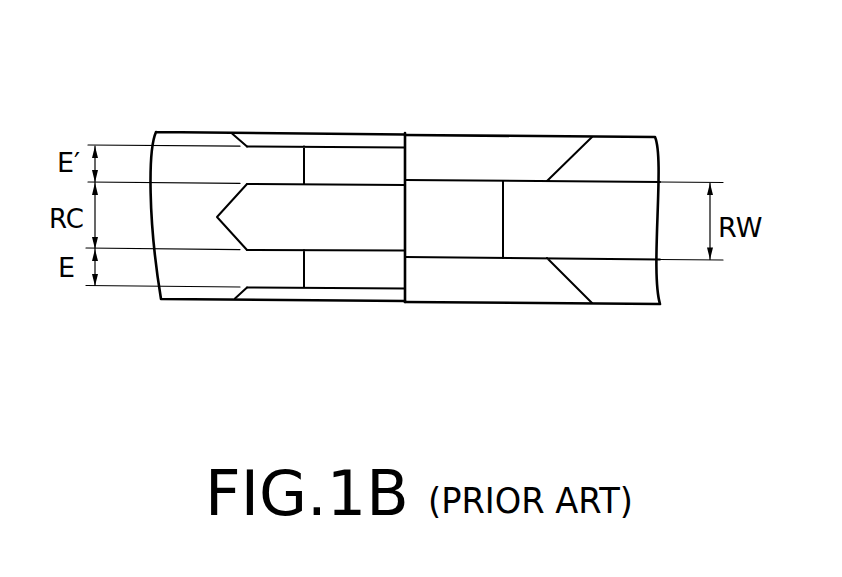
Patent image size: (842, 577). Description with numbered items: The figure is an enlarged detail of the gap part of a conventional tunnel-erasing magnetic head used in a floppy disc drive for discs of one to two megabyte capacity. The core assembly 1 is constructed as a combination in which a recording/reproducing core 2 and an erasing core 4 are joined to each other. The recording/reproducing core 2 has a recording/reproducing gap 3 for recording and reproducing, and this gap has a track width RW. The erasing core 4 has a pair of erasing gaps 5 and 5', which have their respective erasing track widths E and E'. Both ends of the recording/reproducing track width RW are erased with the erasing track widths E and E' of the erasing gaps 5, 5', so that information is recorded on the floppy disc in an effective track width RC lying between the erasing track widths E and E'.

The core assembly 1 is at (414, 132).
The recording/reproducing core 2 is at (595, 153).
The recording/reproducing gap 3 is at (504, 224).
The erasing core 4 is at (207, 293).
The erasing gap 5 is at (326, 309).
The erasing gap 5' is at (326, 131).